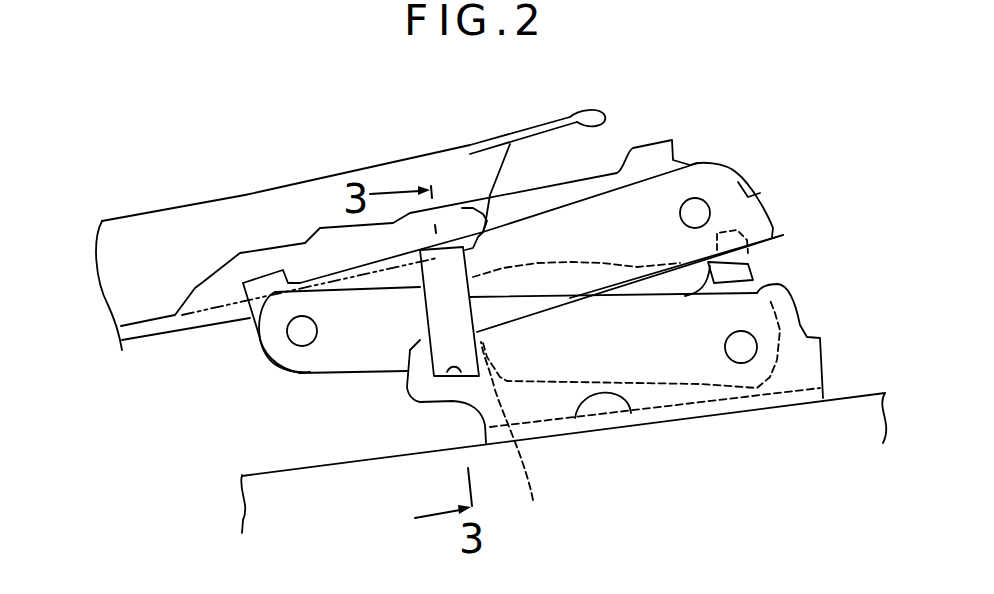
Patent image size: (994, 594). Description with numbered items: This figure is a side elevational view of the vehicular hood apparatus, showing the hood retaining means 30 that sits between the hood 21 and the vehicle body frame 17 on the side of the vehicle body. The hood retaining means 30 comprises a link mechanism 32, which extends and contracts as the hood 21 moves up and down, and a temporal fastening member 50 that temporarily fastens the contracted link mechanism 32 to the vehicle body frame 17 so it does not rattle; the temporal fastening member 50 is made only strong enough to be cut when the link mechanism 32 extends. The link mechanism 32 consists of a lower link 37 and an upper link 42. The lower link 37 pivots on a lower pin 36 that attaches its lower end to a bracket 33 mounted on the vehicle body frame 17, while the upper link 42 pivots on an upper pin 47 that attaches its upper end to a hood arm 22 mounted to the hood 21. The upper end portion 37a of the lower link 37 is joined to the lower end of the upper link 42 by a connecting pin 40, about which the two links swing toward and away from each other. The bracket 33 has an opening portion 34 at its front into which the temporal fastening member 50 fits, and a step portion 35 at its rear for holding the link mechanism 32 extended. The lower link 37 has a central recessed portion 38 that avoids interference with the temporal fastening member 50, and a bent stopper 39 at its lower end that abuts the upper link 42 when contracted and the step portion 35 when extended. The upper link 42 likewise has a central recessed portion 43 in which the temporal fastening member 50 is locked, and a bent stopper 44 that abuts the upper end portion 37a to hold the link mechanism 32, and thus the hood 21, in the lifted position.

The vehicle body frame 17 is at (631, 413).
The hood 21 is at (182, 206).
The hood arm 22 is at (527, 185).
The hood retaining means 30 is at (737, 134).
The link mechanism 32 is at (564, 198).
The bracket 33 is at (823, 355).
The opening portion 34 is at (431, 370).
The step portion 35 is at (802, 338).
The lower pin 36 is at (757, 363).
The lower link 37 is at (461, 372).
The upper end portion of the lower link 37a is at (330, 373).
The recessed portion 38 is at (513, 438).
The bent stopper 39 is at (742, 258).
The connecting pin 40 is at (288, 337).
The upper link 42 is at (650, 277).
The recessed portion 43 is at (452, 220).
The bent stopper 44 is at (265, 272).
The upper pin 47 is at (697, 198).
The temporal fastening member 50 is at (430, 305).